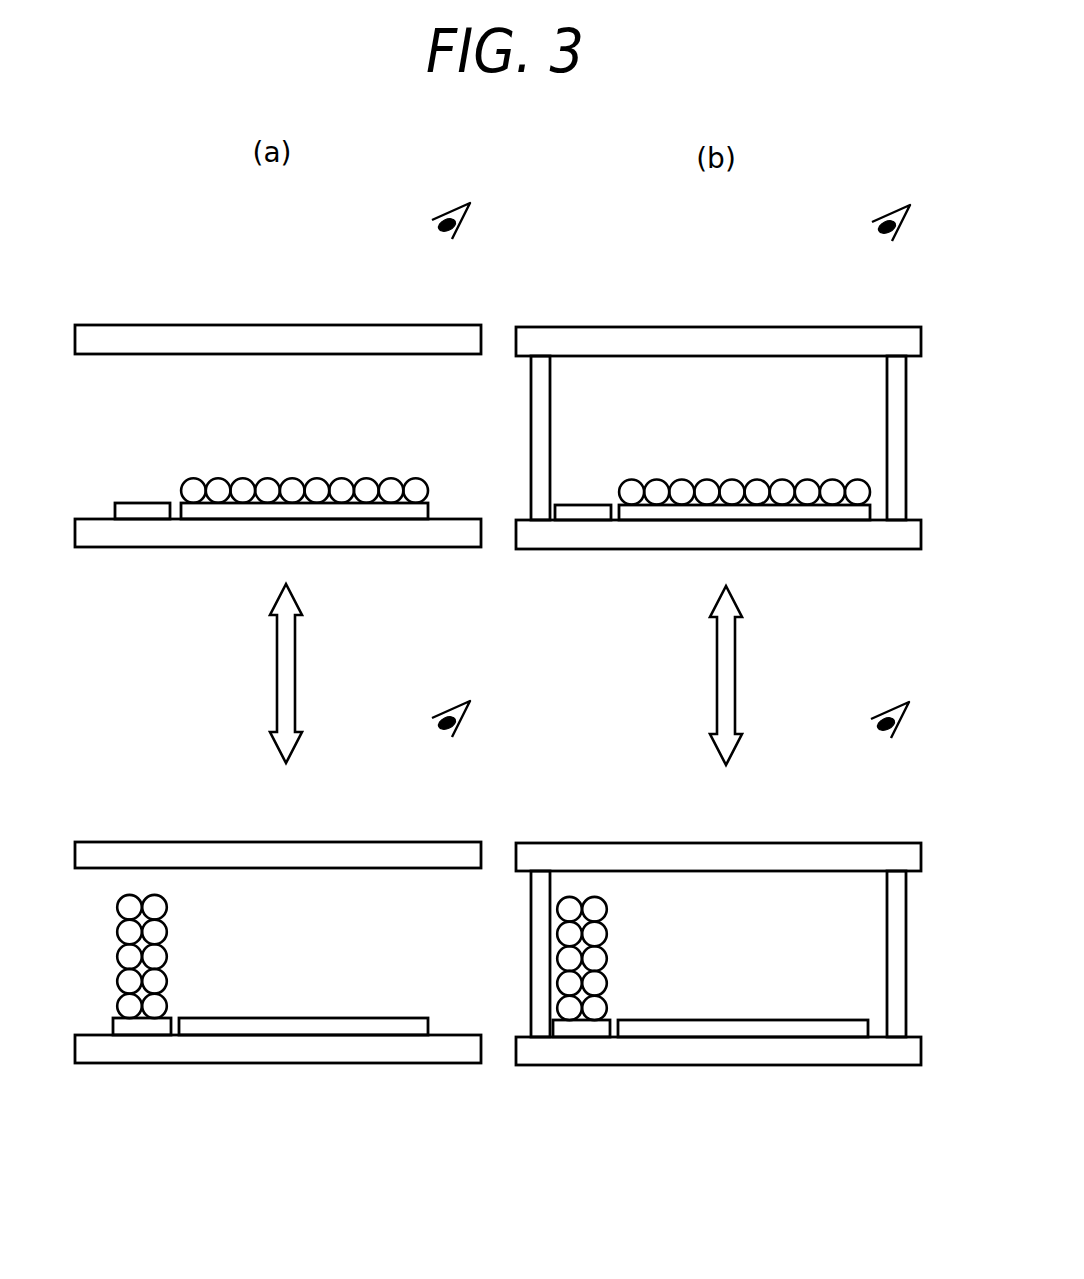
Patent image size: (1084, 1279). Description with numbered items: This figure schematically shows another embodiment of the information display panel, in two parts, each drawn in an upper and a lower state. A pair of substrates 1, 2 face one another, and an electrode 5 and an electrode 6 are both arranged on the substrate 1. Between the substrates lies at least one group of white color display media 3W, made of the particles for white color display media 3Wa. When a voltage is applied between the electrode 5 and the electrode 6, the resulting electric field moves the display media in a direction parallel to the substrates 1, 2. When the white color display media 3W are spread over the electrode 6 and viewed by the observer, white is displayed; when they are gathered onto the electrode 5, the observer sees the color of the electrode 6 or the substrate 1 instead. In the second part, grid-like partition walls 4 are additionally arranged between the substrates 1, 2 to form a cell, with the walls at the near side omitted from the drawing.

The substrate 1 is at (228, 540).
The substrate 2 is at (305, 341).
The white color display media 3W is at (182, 464).
The particles for white color display media 3Wa is at (157, 957).
The partition walls 4 is at (545, 432).
The electrode 5 is at (138, 519).
The electrode 6 is at (390, 519).